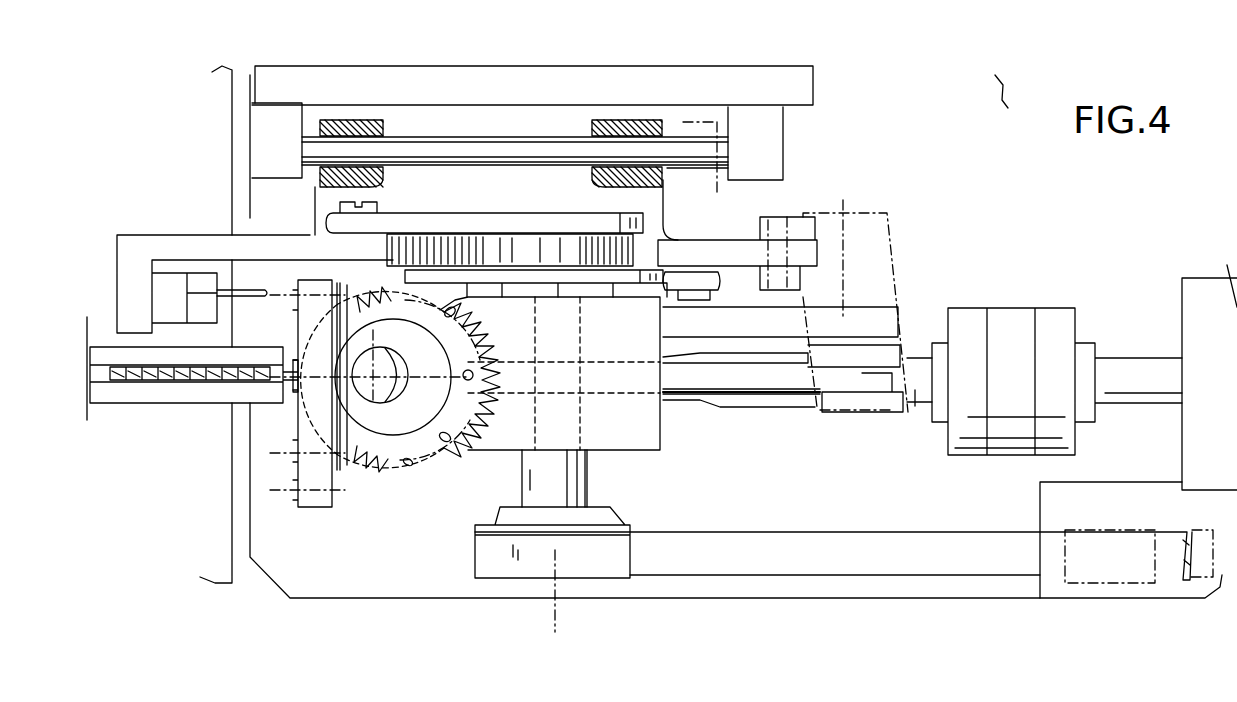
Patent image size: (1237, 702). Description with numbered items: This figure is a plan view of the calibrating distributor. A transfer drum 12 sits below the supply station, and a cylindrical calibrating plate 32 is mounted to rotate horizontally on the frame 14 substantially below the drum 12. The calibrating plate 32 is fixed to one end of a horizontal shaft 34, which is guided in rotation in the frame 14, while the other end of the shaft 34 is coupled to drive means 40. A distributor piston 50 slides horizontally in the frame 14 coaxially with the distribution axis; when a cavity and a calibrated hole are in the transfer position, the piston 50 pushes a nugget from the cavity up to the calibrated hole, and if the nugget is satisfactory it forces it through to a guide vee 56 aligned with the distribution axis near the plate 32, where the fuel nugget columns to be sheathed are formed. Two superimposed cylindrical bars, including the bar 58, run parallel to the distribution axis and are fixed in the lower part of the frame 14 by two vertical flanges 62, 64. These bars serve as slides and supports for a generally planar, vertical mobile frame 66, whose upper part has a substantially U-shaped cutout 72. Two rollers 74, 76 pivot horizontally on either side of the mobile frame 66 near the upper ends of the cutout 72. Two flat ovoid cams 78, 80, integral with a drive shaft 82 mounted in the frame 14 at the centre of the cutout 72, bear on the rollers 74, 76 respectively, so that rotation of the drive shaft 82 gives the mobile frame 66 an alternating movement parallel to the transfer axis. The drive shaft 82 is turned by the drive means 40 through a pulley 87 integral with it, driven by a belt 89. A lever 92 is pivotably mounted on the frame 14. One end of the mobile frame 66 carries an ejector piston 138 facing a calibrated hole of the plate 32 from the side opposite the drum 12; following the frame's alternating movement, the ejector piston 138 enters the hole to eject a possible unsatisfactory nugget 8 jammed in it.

The unsatisfactory nugget 8 is at (184, 381).
The transfer drum 12 is at (430, 470).
The frame 14 is at (823, 103).
The calibrating plate 32 is at (315, 500).
The horizontal shaft 34 is at (915, 393).
The drive means 40 is at (1172, 464).
The distributor piston 50 is at (273, 378).
The guide vee 56 is at (102, 378).
The cylindrical bar 58 is at (438, 147).
The vertical flange 62 is at (262, 152).
The vertical flange 64 is at (770, 146).
The mobile frame 66 is at (165, 240).
The U-shaped cutout 72 is at (447, 250).
The roller 74 is at (328, 220).
The roller 76 is at (708, 270).
The ovoid cam 78 is at (433, 218).
The ovoid cam 80 is at (610, 278).
The drive shaft 82 is at (595, 477).
The pulley 87 is at (473, 523).
The belt 89 is at (758, 533).
The lever 92 is at (916, 260).
The ejector piston 138 is at (256, 296).